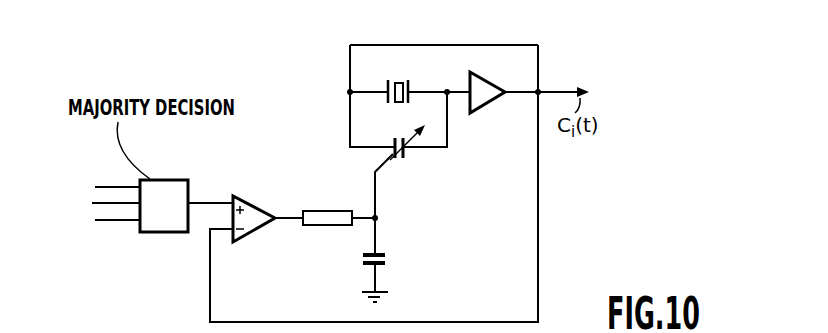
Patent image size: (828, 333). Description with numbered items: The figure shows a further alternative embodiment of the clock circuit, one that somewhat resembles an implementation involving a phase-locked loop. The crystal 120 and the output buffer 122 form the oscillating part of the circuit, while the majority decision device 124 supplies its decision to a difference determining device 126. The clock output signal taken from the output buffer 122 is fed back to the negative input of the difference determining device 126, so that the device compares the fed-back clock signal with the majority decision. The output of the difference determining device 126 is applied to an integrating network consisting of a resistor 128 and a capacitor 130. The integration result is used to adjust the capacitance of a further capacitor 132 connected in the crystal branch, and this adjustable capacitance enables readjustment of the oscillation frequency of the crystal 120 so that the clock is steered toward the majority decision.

The crystal 120 is at (399, 80).
The output buffer 122 is at (493, 100).
The majority decision device 124 is at (165, 180).
The difference determining device 126 is at (250, 196).
The resistor 128 is at (326, 211).
The capacitor 130 is at (378, 255).
The capacitor 132 is at (406, 156).